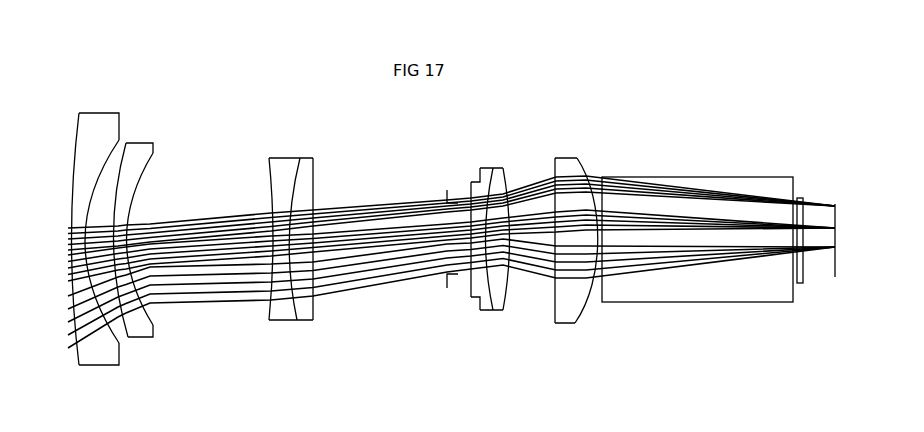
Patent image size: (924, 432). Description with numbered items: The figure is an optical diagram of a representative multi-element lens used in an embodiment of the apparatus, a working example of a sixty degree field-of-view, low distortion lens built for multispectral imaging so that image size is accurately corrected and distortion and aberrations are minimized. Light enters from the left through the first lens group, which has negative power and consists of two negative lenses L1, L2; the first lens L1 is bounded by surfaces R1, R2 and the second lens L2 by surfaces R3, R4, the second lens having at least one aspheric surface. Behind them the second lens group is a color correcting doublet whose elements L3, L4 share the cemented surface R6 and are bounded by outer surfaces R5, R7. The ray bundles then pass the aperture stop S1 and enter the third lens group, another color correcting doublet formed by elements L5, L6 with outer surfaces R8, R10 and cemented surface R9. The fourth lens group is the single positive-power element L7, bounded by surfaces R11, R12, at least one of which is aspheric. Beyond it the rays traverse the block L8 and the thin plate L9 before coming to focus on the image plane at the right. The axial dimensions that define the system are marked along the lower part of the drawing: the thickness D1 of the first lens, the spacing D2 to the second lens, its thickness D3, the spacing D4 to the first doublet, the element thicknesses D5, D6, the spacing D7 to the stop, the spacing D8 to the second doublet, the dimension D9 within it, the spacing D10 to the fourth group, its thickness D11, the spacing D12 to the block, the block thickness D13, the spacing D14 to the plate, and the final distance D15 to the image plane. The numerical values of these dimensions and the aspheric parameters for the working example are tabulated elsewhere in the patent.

The first lens of the first lens group L1 is at (98, 366).
The second lens of the first lens group L2 is at (143, 338).
The first element of the second lens group doublet L3 is at (283, 322).
The second element of the second lens group doublet L4 is at (310, 322).
The first element of the third lens group doublet L5 is at (475, 298).
The second element of the third lens group doublet L6 is at (500, 311).
The fourth lens group element L7 is at (572, 323).
The color sorting prism block L8 is at (712, 303).
The plate element L9 is at (803, 284).
The first lens surface R1 is at (73, 150).
The second lens surface R2 is at (115, 143).
The third lens surface R3 is at (125, 157).
The fourth lens surface R4 is at (150, 163).
The fifth lens surface R5 is at (270, 178).
The sixth lens surface R6 is at (290, 172).
The seventh lens surface R7 is at (318, 190).
The eighth lens surface R8 is at (469, 195).
The ninth lens surface R9 is at (497, 167).
The tenth lens surface R10 is at (508, 195).
The eleventh lens surface R11 is at (562, 168).
The twelfth lens surface R12 is at (580, 170).
The aperture stop S1 is at (447, 190).
The axial thickness D1 is at (70, 268).
The axial spacing D2 is at (104, 242).
The axial thickness D3 is at (163, 318).
The axial spacing D4 is at (215, 240).
The axial thickness D5 is at (310, 248).
The axial thickness D6 is at (360, 283).
The axial spacing D7 is at (410, 270).
The axial spacing D8 is at (462, 270).
The axial thickness D9 is at (503, 315).
The axial spacing D10 is at (541, 280).
The axial thickness D11 is at (588, 282).
The axial spacing D12 is at (603, 270).
The axial thickness D13 is at (733, 240).
The axial spacing D14 is at (796, 197).
The axial spacing D15 is at (818, 197).